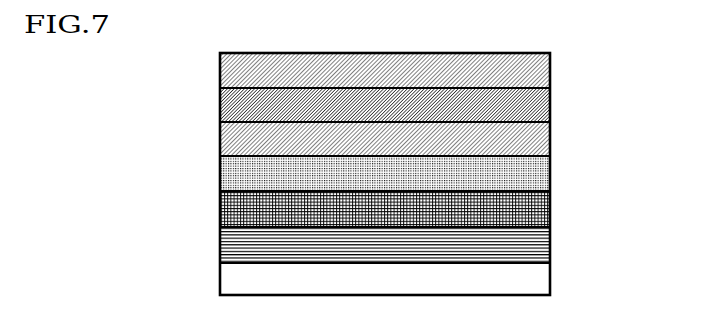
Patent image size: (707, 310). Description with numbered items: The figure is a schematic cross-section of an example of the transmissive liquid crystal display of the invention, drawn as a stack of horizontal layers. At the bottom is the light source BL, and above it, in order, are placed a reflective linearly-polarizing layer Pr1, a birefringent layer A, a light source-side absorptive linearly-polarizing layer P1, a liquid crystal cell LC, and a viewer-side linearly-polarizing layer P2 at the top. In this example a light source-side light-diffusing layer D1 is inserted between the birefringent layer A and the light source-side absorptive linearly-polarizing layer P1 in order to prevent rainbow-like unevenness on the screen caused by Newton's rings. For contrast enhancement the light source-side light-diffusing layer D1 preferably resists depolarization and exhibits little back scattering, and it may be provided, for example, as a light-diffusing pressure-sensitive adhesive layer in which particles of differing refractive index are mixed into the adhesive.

The viewer-side linearly-polarizing layer P2 is at (527, 72).
The liquid crystal cell LC is at (527, 103).
The light source-side absorptive linearly-polarizing layer P1 is at (527, 143).
The light source-side light-diffusing layer D1 is at (535, 172).
The birefringent layer A is at (535, 212).
The reflective linearly-polarizing layer Pr1 is at (535, 246).
The light source BL is at (535, 282).